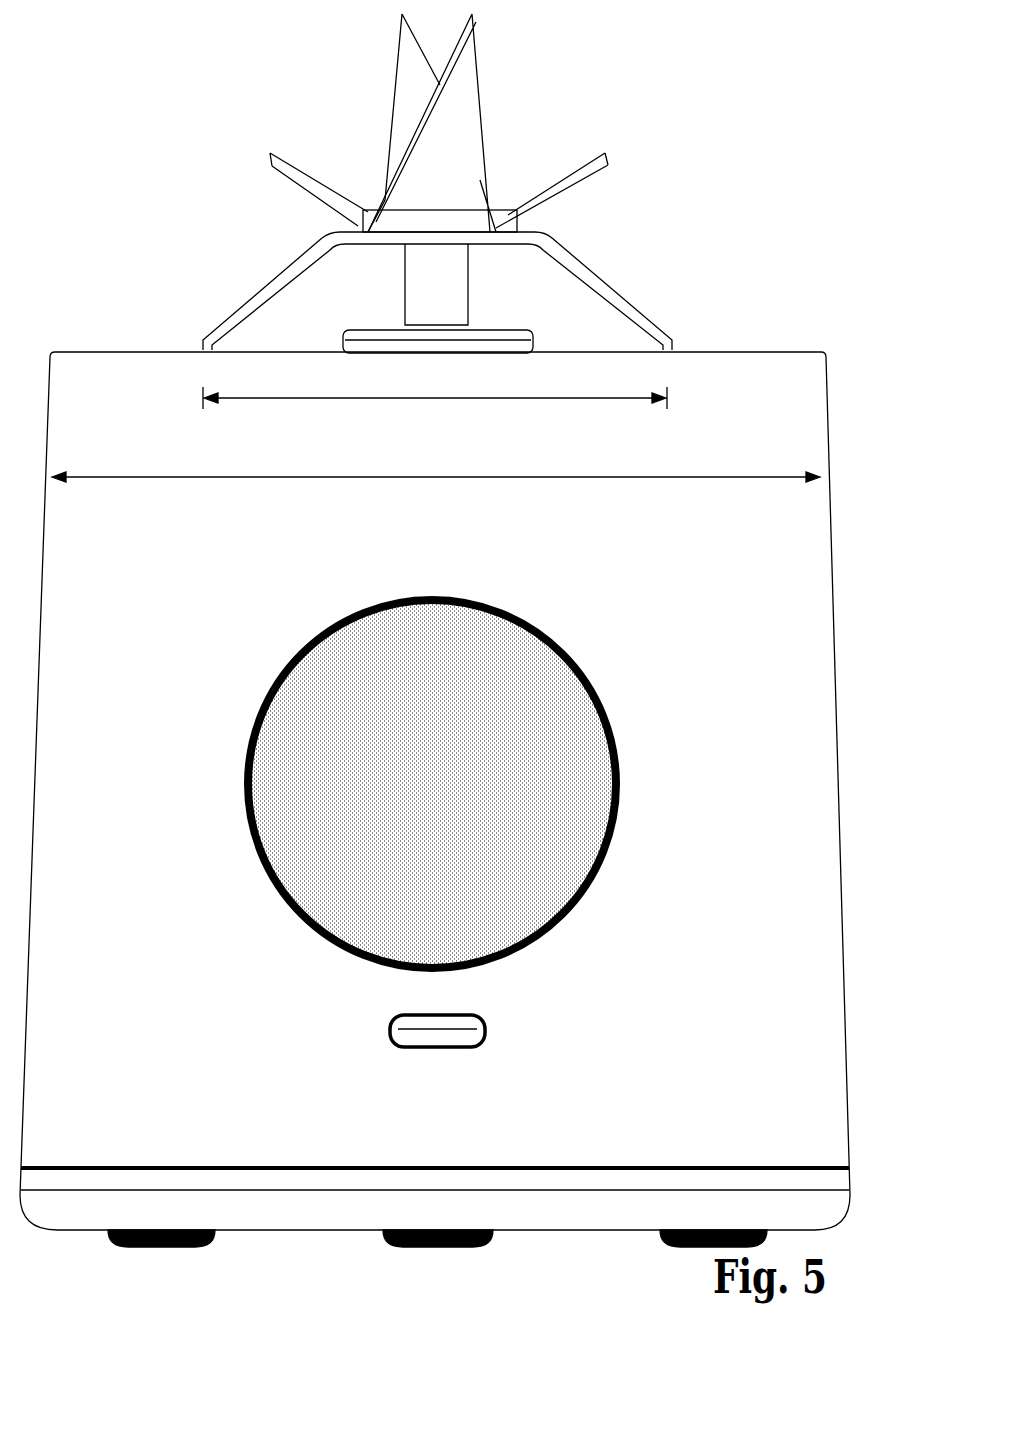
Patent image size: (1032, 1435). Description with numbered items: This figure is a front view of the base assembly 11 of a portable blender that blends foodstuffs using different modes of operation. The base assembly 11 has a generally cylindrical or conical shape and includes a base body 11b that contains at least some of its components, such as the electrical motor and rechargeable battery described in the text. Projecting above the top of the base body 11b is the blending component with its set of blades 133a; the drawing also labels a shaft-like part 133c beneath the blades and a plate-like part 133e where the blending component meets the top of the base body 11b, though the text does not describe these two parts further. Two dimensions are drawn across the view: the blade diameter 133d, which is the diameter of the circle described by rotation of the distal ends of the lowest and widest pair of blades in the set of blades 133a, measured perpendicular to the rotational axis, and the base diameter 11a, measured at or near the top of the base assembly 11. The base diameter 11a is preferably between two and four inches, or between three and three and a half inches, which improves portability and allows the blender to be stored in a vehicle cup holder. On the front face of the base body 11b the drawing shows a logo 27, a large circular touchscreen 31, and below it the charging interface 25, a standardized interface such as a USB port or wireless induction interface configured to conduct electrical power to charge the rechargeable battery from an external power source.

The base assembly 11 is at (476, 630).
The base diameter 11a is at (520, 465).
The base body 11b is at (902, 330).
The charging interface 25 is at (648, 1075).
The logo 27 is at (648, 593).
The touchscreen 31 is at (740, 948).
The set of blades 133a is at (800, 201).
The blade shaft 133c is at (461, 293).
The blade diameter 133d is at (541, 386).
The blade base plate 133e is at (569, 327).